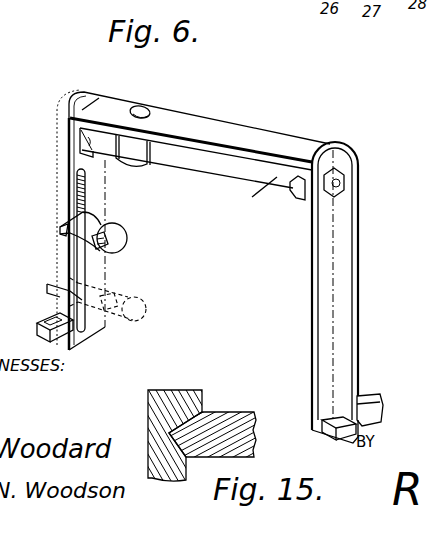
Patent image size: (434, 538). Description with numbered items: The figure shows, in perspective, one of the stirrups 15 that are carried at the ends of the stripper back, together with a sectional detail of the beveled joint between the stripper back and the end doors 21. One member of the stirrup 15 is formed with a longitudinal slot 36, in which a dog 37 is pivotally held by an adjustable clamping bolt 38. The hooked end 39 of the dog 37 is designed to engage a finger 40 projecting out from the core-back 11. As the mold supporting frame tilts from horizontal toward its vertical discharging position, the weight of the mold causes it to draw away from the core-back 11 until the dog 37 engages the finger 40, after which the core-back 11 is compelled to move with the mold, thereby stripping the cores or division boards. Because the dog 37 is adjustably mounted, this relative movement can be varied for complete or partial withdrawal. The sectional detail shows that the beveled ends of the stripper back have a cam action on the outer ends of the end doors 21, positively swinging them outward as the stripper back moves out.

In FIG. 6, the stirrup 15 is at (324, 220).
In FIG. 6, the longitudinal slot 36 is at (77, 185).
In FIG. 6, the dog 37 is at (88, 222).
In FIG. 6, the adjustable clamping bolt 38 is at (115, 254).
In FIG. 6, the hooked end 39 is at (62, 232).
In FIG. 6, the finger 40 is at (122, 323).
In FIG. 15, the end door 21 is at (160, 408).
In FIG. 15, the core-back 11 is at (256, 442).